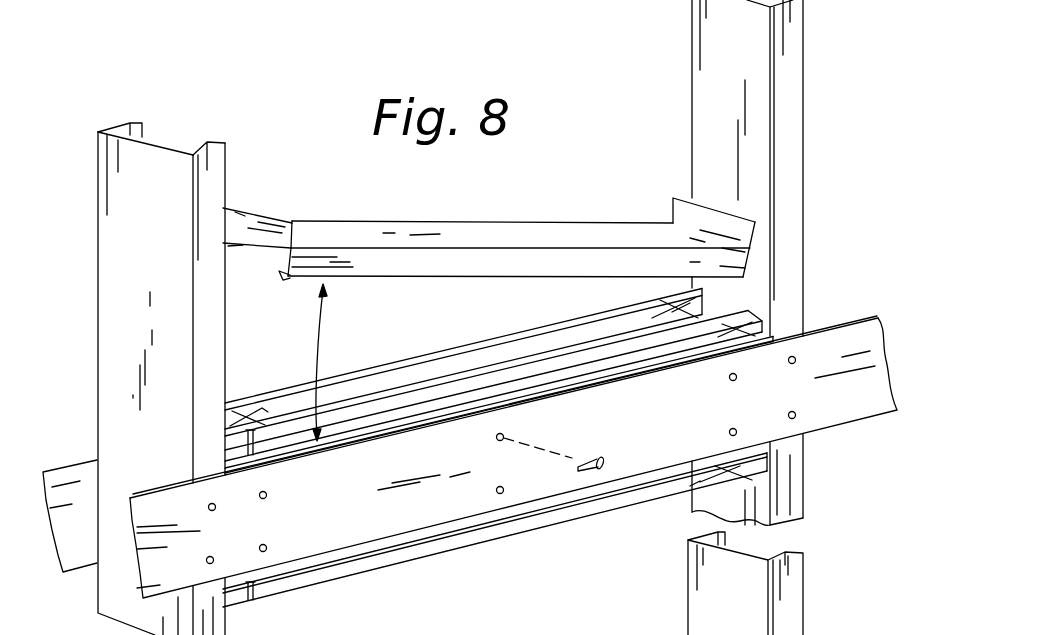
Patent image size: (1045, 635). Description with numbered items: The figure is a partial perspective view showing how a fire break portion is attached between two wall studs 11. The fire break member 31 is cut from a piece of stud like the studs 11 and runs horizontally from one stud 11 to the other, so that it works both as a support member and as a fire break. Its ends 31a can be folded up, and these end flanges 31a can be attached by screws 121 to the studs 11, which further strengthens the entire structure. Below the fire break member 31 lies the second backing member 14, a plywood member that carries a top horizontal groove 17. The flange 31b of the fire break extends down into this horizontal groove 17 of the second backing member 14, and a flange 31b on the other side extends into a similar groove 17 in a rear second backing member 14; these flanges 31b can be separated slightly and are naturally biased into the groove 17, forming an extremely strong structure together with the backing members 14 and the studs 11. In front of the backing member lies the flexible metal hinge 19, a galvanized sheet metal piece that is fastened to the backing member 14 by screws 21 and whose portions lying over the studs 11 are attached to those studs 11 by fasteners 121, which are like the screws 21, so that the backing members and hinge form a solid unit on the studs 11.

The stud 11 is at (121, 272).
The second backing member 14 is at (490, 350).
The horizontal groove 17 is at (350, 433).
The flexible metal hinge 19 is at (640, 458).
The screw 21 is at (585, 466).
The fire break member 31 is at (472, 228).
The end flange 31a is at (233, 212).
The flange 31b is at (297, 317).
The fastener 121 is at (797, 356).